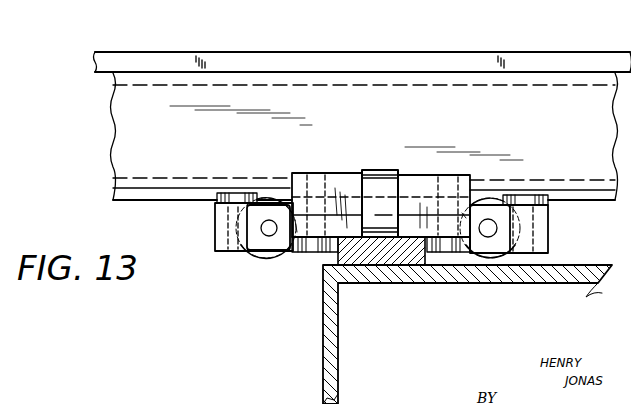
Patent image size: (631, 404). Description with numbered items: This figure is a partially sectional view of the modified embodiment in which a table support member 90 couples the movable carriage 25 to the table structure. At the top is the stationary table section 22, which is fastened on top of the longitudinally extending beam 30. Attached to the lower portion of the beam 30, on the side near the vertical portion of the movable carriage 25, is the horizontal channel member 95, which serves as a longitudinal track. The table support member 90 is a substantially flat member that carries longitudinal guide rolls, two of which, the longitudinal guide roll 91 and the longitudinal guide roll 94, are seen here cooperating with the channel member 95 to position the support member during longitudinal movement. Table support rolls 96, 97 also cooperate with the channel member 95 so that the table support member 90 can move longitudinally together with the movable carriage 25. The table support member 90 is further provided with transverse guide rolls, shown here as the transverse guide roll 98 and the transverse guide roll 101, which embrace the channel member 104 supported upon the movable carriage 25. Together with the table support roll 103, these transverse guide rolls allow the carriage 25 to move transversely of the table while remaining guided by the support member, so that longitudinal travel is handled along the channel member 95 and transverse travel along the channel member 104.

The stationary table section 22 is at (355, 40).
The beam 30 is at (128, 141).
The horizontal channel member 95 is at (153, 189).
The longitudinal guide roll 91 is at (248, 200).
The table support roll 96 is at (265, 258).
The transverse guide roll 98 is at (307, 254).
The table support roll 103 is at (385, 167).
The table support member 90 is at (467, 173).
The transverse guide roll 101 is at (448, 252).
The longitudinal guide roll 94 is at (530, 197).
The table support roll 97 is at (552, 232).
The channel member 104 is at (387, 255).
The movable carriage 25 is at (322, 384).